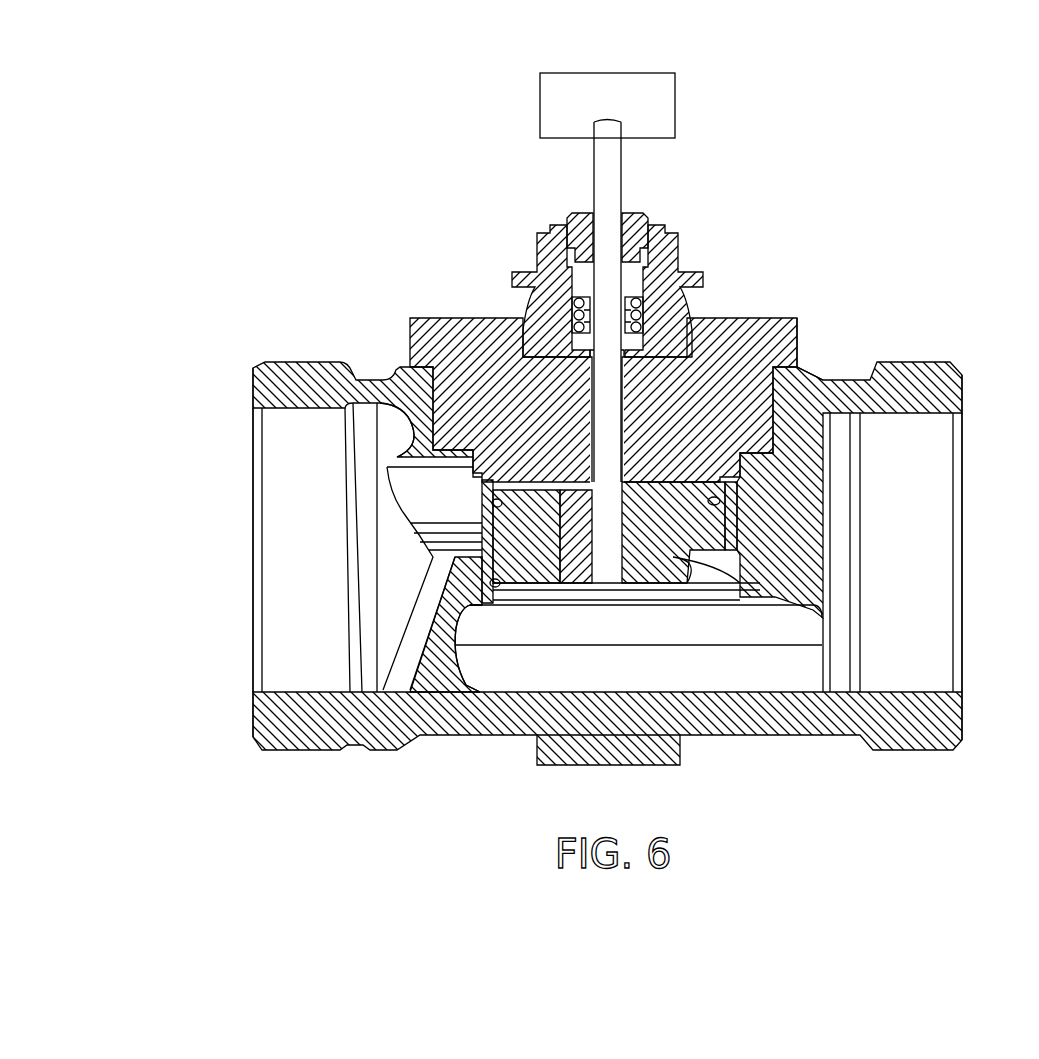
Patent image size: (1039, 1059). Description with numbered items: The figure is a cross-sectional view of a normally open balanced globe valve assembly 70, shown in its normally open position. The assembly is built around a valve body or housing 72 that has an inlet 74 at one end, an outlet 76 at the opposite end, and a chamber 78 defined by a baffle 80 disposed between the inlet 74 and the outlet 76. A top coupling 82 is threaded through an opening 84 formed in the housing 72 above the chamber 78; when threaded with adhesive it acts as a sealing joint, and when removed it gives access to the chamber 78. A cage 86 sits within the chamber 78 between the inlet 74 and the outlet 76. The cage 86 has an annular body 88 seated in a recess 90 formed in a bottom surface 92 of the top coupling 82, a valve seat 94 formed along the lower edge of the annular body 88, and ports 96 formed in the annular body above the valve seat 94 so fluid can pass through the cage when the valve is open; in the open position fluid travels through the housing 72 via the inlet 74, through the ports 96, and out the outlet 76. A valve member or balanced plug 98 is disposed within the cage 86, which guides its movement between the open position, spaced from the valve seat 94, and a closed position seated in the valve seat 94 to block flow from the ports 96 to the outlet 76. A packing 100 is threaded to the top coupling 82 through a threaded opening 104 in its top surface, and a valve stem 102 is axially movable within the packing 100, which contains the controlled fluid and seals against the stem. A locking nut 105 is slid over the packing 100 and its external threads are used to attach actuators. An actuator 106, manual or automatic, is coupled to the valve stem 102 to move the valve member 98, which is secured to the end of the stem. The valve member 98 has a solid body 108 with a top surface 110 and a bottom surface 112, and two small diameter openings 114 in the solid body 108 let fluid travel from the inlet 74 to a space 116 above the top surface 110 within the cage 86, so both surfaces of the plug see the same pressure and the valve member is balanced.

The balanced globe valve assembly 70 is at (884, 256).
The valve body or housing 72 is at (255, 745).
The inlet 74 is at (958, 692).
The outlet 76 is at (255, 692).
The chamber 78 is at (667, 583).
The baffle 80 is at (736, 548).
The top coupling 82 is at (428, 322).
The opening 84 is at (800, 332).
The cage 86 is at (740, 502).
The annular body 88 is at (478, 548).
The recess 90 is at (465, 540).
The bottom surface 92 is at (742, 356).
The valve seat 94 is at (497, 592).
The ports 96 is at (460, 600).
The valve member or balanced plug 98 is at (634, 585).
The packing 100 is at (666, 257).
The valve stem 102 is at (608, 155).
The threaded opening 104 is at (540, 235).
The locking nut 105 is at (702, 270).
The actuator 106 is at (586, 73).
The solid body 108 is at (712, 623).
The top surface 110 is at (522, 497).
The bottom surface 112 is at (648, 583).
The small diameter openings 114 is at (570, 592).
The space 116 is at (710, 360).